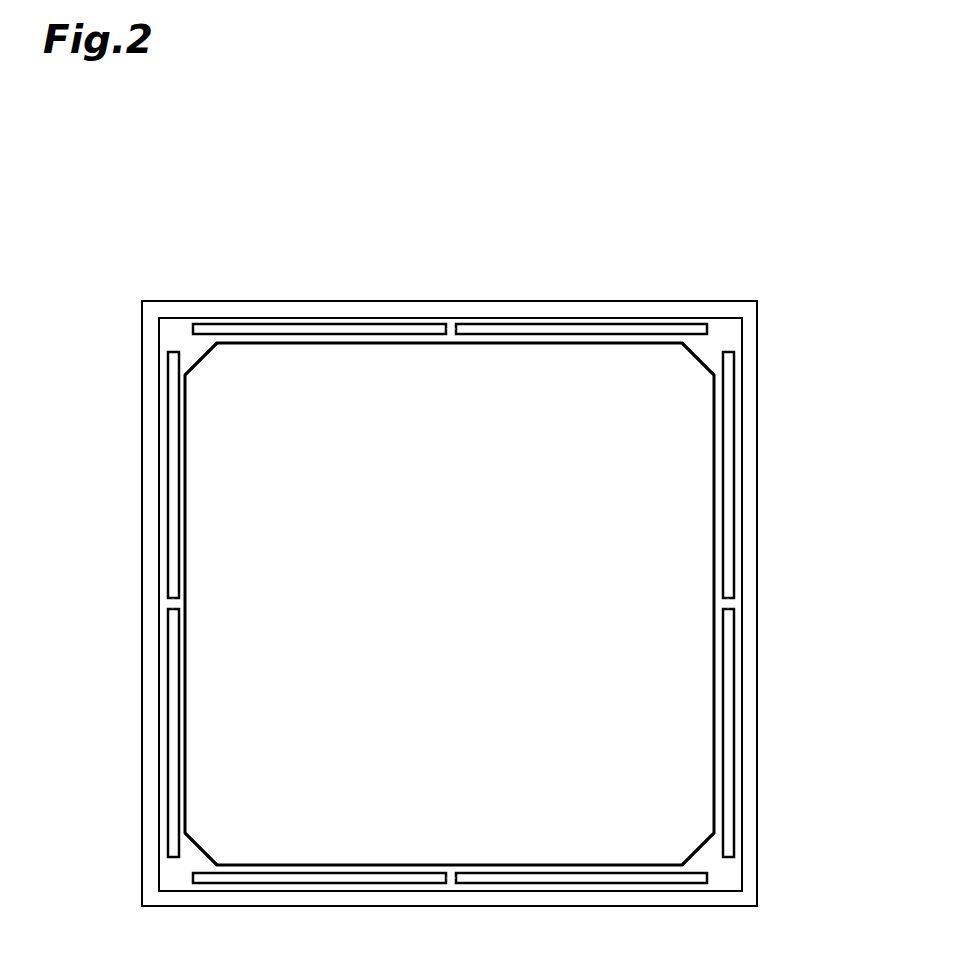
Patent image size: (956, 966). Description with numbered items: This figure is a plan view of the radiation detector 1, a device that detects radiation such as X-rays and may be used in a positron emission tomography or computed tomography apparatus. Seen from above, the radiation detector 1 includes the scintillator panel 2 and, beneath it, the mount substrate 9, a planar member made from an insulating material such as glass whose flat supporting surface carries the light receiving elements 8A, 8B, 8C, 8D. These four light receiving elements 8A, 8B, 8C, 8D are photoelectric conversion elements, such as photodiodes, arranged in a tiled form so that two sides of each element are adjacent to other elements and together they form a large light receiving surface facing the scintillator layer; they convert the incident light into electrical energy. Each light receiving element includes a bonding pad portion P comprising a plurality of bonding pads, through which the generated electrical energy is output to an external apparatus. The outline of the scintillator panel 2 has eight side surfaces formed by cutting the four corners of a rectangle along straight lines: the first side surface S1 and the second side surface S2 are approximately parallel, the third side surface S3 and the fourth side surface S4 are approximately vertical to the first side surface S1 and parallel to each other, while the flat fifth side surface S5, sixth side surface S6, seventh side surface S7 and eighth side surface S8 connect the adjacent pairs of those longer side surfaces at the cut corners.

The radiation detector 1 is at (180, 198).
The scintillator panel 2 is at (673, 691).
The mount substrate 9 is at (287, 302).
The light receiving element 8A is at (176, 334).
The light receiving element 8B is at (727, 334).
The light receiving element 8C is at (176, 872).
The light receiving element 8D is at (727, 872).
The first side surface S1 is at (176, 469).
The second side surface S2 is at (717, 469).
The third side surface S3 is at (587, 343).
The fourth side surface S4 is at (587, 866).
The fifth side surface S5 is at (198, 357).
The sixth side surface S6 is at (199, 848).
The seventh side surface S7 is at (700, 357).
The eighth side surface S8 is at (700, 848).
The bonding pad portion P is at (493, 330).